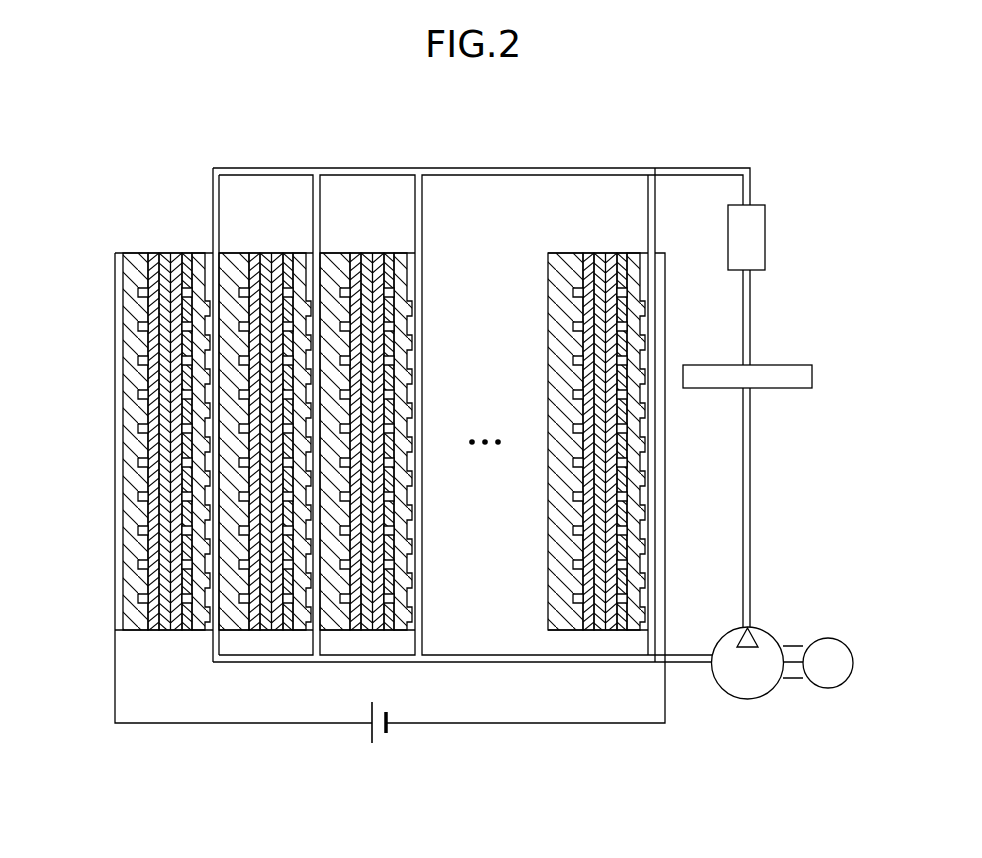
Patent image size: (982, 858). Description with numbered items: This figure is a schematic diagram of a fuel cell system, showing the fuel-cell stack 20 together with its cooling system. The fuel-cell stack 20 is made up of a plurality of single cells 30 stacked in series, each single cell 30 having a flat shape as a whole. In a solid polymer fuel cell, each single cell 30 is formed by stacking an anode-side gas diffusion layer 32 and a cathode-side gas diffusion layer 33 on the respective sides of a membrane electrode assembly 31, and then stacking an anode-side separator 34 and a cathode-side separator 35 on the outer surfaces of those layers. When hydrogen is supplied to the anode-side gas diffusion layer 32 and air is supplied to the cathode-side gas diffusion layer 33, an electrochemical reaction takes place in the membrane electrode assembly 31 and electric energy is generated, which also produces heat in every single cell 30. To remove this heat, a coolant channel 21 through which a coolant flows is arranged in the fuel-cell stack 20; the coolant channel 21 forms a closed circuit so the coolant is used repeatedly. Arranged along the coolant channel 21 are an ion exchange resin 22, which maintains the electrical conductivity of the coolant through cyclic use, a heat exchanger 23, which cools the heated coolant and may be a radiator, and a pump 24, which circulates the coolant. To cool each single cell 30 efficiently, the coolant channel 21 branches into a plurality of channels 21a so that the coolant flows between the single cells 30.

The fuel-cell stack 20 is at (574, 231).
The coolant channel 21 is at (268, 168).
The channels 21a is at (212, 203).
The ion exchange resin 22 is at (765, 237).
The heat exchanger 23 is at (812, 375).
The pump 24 is at (793, 645).
The single cell 30 is at (138, 252).
The membrane electrode assembly 31 is at (123, 462).
The anode-side gas diffusion layer 32 is at (123, 441).
The cathode-side gas diffusion layer 33 is at (157, 483).
The anode-side separator 34 is at (101, 441).
The cathode-side separator 35 is at (197, 483).